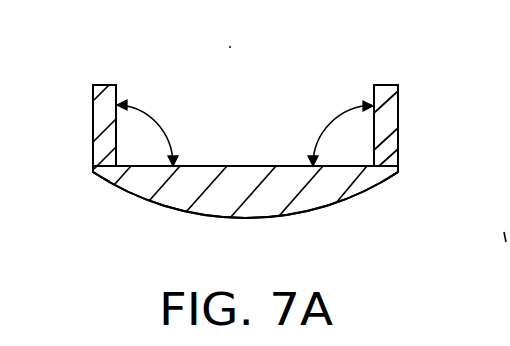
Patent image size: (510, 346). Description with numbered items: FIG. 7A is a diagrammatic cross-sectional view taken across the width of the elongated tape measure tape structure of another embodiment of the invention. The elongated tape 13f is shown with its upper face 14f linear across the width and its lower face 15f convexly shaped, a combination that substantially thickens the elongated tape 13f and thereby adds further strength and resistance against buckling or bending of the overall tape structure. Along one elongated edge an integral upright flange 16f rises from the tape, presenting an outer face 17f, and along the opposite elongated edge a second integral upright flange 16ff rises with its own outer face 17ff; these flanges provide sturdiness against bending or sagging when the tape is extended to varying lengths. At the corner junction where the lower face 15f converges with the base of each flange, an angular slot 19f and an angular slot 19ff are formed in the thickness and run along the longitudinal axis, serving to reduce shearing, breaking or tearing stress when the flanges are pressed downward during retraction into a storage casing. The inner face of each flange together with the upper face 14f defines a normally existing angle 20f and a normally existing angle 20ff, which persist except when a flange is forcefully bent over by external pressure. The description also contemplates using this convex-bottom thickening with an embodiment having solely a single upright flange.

The elongated tape 13f is at (339, 197).
The upper face 14f is at (237, 166).
The lower face 15f is at (252, 220).
The upright flange 16f is at (110, 85).
The outer face 17f is at (95, 112).
The slot 19f is at (104, 173).
The angle 20f is at (167, 130).
The upright flange 16ff is at (385, 85).
The outer face 17ff is at (419, 81).
The slot 19ff is at (396, 170).
The angle 20ff is at (324, 123).